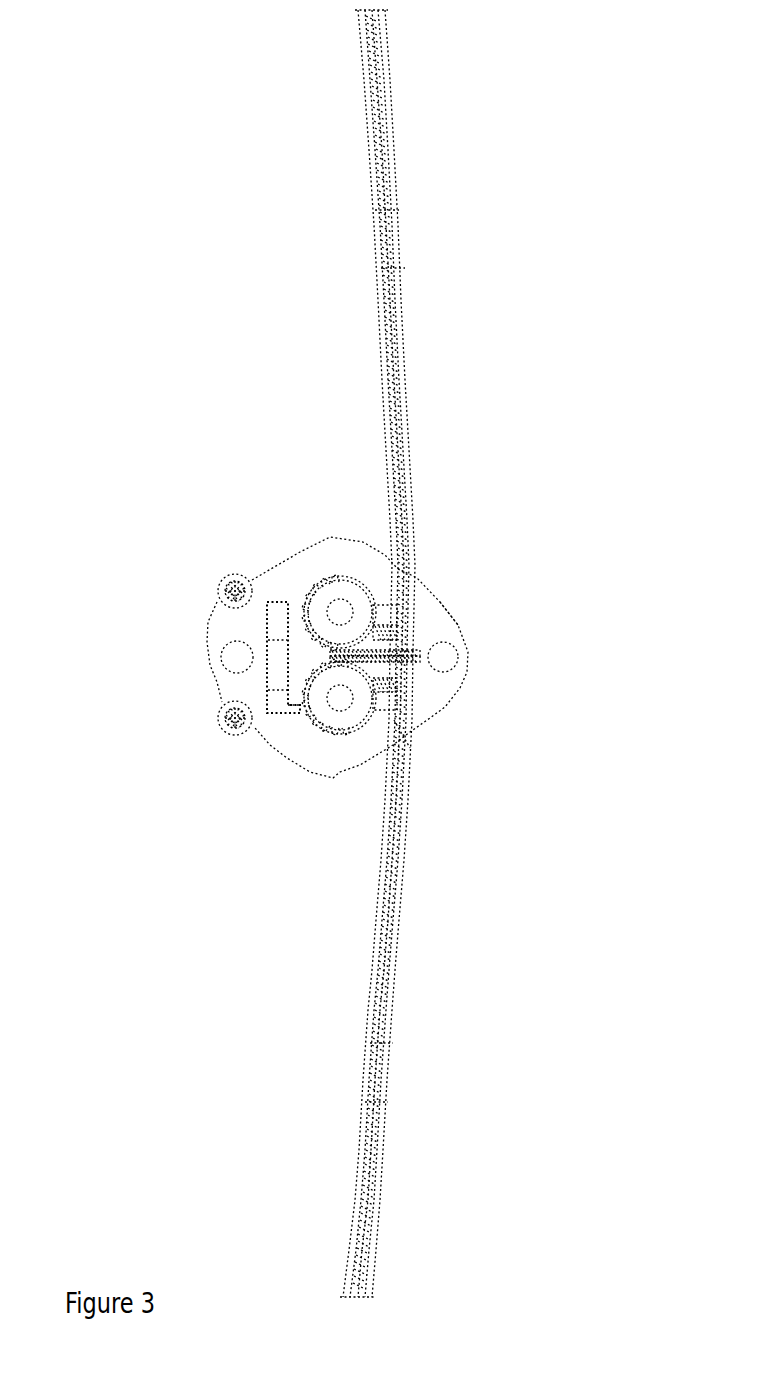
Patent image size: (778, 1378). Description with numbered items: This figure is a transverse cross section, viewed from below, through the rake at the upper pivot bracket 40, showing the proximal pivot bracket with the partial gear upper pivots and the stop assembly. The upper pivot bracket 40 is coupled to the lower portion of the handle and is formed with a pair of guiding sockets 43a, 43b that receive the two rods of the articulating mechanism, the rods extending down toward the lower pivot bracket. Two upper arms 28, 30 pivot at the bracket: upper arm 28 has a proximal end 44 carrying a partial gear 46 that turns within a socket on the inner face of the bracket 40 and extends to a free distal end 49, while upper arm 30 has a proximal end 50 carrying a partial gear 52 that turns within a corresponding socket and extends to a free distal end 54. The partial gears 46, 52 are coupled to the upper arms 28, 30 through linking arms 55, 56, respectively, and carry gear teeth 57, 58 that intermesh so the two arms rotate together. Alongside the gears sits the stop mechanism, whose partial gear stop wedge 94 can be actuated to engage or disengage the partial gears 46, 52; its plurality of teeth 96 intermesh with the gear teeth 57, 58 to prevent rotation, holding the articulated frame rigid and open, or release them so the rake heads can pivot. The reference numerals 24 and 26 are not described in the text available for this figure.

The first strip portion 24 is at (388, 210).
The second strip portion 26 is at (373, 1102).
The upper arm 28 is at (378, 297).
The upper arm 30 is at (373, 985).
The upper pivot bracket 40 is at (343, 553).
The guiding socket 43a is at (221, 658).
The guiding socket 43b is at (441, 659).
The proximal end 44 is at (412, 578).
The partial gear 46 is at (298, 610).
The free distal end 49 is at (383, 24).
The proximal end 50 is at (405, 732).
The partial gear 52 is at (332, 722).
The free distal end 54 is at (370, 1277).
The linking arm 55 is at (380, 638).
The linking arm 56 is at (380, 666).
The gear teeth 57 is at (307, 592).
The gear teeth 58 is at (302, 722).
The partial gear stop wedge 94 is at (288, 660).
The teeth 96 is at (288, 696).